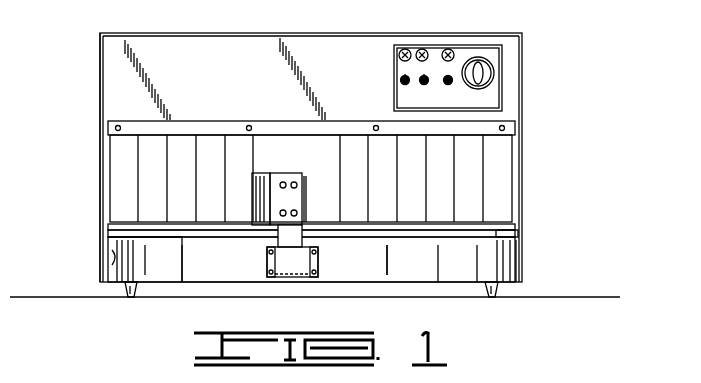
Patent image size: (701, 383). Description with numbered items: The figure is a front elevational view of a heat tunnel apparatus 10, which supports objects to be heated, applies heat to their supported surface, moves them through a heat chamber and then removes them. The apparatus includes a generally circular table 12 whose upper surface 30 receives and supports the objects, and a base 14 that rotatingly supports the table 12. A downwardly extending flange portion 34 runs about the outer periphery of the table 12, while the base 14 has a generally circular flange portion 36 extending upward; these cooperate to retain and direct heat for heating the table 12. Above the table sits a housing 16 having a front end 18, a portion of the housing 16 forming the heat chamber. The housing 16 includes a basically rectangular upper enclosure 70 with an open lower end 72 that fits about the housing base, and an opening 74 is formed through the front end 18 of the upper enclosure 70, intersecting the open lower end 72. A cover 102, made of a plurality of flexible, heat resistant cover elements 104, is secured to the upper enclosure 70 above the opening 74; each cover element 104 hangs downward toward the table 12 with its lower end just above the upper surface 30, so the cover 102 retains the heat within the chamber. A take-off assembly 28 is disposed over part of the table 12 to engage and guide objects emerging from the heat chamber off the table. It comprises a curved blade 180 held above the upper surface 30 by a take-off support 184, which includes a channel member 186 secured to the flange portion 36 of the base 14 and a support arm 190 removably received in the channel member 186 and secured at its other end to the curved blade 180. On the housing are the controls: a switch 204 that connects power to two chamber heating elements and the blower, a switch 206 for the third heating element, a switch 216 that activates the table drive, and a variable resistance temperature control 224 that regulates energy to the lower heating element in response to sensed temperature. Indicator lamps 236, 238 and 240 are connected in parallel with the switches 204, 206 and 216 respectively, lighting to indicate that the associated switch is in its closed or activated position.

The heat tunnel apparatus 10 is at (540, 30).
The table 12 is at (480, 231).
The base 14 is at (455, 272).
The housing 16 is at (521, 94).
The front end 18 is at (168, 40).
The take-off assembly 28 is at (298, 172).
The upper surface 30 is at (472, 222).
The downwardly extending flange portion 34 is at (165, 234).
The flange portion 36 is at (398, 272).
The upper enclosure 70 is at (100, 65).
The open lower end 72 is at (515, 279).
The opening 74 is at (115, 263).
The cover 102 is at (480, 162).
The cover elements 104 is at (155, 148).
The curved blade 180 is at (262, 180).
The take-off support 184 is at (318, 260).
The channel member 186 is at (280, 258).
The support arm 190 is at (300, 240).
The switch 204 is at (402, 76).
The switch 206 is at (422, 85).
The switch 216 is at (448, 85).
The variable resistance temperature control 224 is at (492, 70).
The indicator lamp 236 is at (405, 48).
The indicator lamp 238 is at (422, 48).
The indicator lamp 240 is at (452, 50).